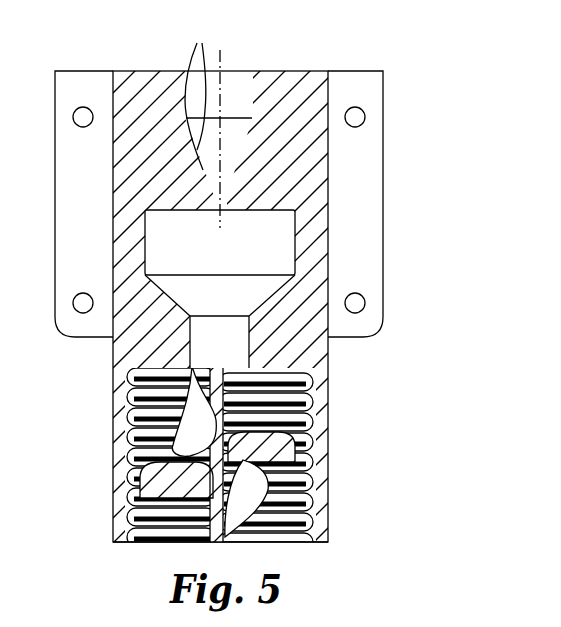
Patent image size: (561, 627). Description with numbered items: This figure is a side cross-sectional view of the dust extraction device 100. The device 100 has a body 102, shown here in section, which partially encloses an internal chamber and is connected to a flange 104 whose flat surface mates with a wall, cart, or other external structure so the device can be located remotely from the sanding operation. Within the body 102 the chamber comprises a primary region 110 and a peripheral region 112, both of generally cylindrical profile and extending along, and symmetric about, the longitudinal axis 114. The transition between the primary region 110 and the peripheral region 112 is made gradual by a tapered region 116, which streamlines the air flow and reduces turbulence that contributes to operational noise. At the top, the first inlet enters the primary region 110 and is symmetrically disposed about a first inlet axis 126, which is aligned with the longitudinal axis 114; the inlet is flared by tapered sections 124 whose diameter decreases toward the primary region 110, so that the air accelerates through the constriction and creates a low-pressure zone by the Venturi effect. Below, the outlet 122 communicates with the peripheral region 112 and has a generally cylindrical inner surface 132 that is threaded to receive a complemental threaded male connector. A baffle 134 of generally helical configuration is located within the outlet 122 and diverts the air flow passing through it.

The dust extraction device 100 is at (280, 302).
The body 102 is at (130, 71).
The flange 104 is at (384, 185).
The primary region 110 is at (201, 257).
The peripheral region 112 is at (201, 355).
The longitudinal axis 114 is at (279, 132).
The first inlet axis 126 is at (222, 58).
The tapered region 116 is at (201, 305).
The outlet 122 is at (150, 543).
The tapered sections 124 is at (217, 94).
The inner surface 132 is at (132, 430).
The baffle 134 is at (243, 485).